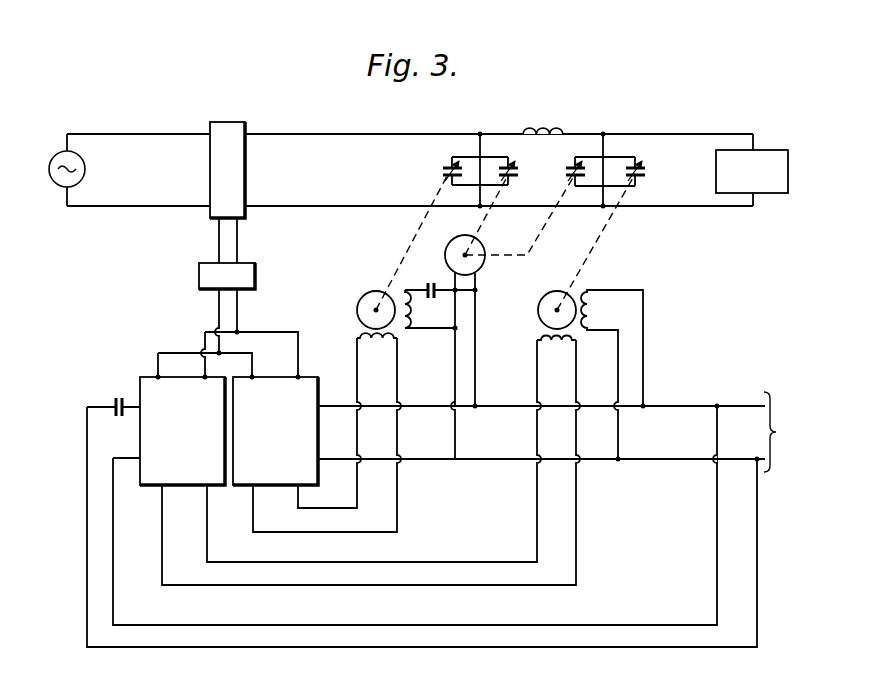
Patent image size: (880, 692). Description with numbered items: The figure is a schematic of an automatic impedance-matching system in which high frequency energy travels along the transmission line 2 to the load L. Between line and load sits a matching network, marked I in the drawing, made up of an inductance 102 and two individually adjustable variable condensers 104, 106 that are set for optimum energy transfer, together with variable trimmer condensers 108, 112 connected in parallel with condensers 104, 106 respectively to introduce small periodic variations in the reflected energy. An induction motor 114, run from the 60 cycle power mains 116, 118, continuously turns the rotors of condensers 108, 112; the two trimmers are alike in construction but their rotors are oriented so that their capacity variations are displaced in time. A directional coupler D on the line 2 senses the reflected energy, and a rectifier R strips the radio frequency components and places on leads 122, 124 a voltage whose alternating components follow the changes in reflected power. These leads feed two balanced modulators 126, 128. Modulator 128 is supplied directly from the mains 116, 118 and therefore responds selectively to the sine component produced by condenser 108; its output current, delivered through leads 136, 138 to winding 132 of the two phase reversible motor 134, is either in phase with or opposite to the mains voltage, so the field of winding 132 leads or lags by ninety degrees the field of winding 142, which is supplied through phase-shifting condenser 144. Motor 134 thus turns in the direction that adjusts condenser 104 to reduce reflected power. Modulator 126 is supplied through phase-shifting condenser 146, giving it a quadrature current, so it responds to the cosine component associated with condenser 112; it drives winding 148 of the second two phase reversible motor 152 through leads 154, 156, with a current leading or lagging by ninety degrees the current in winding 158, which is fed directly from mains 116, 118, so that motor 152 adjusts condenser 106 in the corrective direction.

The transmission line 2 is at (117, 140).
The directional coupler D is at (248, 161).
The rectifier R is at (260, 273).
The lead 122 is at (239, 307).
The lead 124 is at (216, 306).
The balanced modulator 126 is at (145, 377).
The balanced modulator 128 is at (311, 377).
The phase-shifting condenser 146 is at (115, 395).
The power main 116 is at (686, 403).
The power main 118 is at (673, 459).
The 60 cycle power 60 is at (787, 432).
The lead 154 is at (536, 500).
The lead 156 is at (580, 503).
The lead 136 is at (356, 494).
The lead 138 is at (397, 481).
The winding 132 is at (415, 339).
The two phase reversible motor 134 is at (371, 291).
The induction motor 114 is at (481, 267).
The winding 142 is at (407, 284).
The phase-shifting condenser 144 is at (443, 297).
The two phase reversible motor 152 is at (539, 303).
The winding 148 is at (534, 340).
The motor winding 158 is at (590, 290).
The variable condenser 104 is at (440, 174).
The variable trimmer condenser 108 is at (519, 178).
The variable trimmer condenser 112 is at (565, 171).
The variable condenser 106 is at (646, 177).
The inductance 102 is at (540, 128).
The impedance network I is at (571, 128).
The load L is at (773, 148).